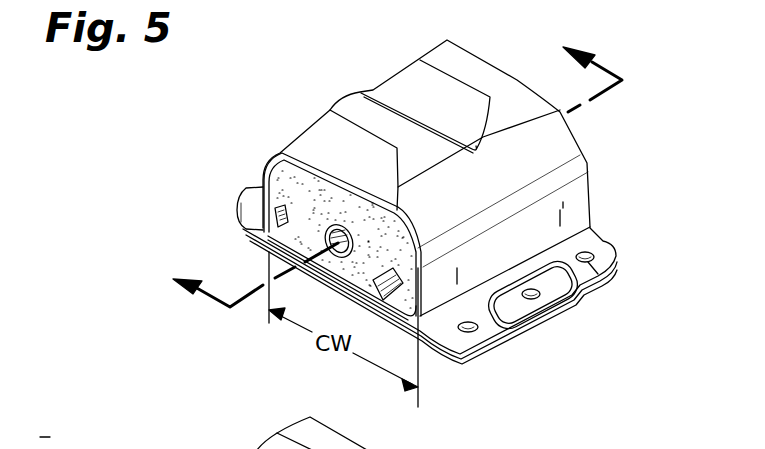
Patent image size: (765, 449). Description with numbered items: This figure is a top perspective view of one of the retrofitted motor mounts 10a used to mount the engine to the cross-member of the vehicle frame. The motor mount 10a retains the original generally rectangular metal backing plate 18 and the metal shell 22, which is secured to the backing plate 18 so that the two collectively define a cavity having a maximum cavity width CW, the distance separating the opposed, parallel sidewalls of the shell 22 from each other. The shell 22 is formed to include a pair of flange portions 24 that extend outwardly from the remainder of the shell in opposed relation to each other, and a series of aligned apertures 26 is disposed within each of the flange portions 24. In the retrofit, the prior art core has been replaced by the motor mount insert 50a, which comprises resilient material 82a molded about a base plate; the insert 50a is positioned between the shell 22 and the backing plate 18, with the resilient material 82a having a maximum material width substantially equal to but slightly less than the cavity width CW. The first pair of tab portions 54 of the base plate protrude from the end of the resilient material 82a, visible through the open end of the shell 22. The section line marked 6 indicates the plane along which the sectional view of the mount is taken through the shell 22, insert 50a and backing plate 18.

The motor mount 10a is at (258, 139).
The shell 22 is at (463, 42).
The motor mount insert 50a is at (312, 168).
The tab portions 54 is at (272, 213).
The resilient material 82a is at (272, 241).
The backing plate 18 is at (486, 356).
The flange portions 24 is at (598, 246).
The apertures 26 is at (540, 295).
The section line 6- 6 is at (385, 162).